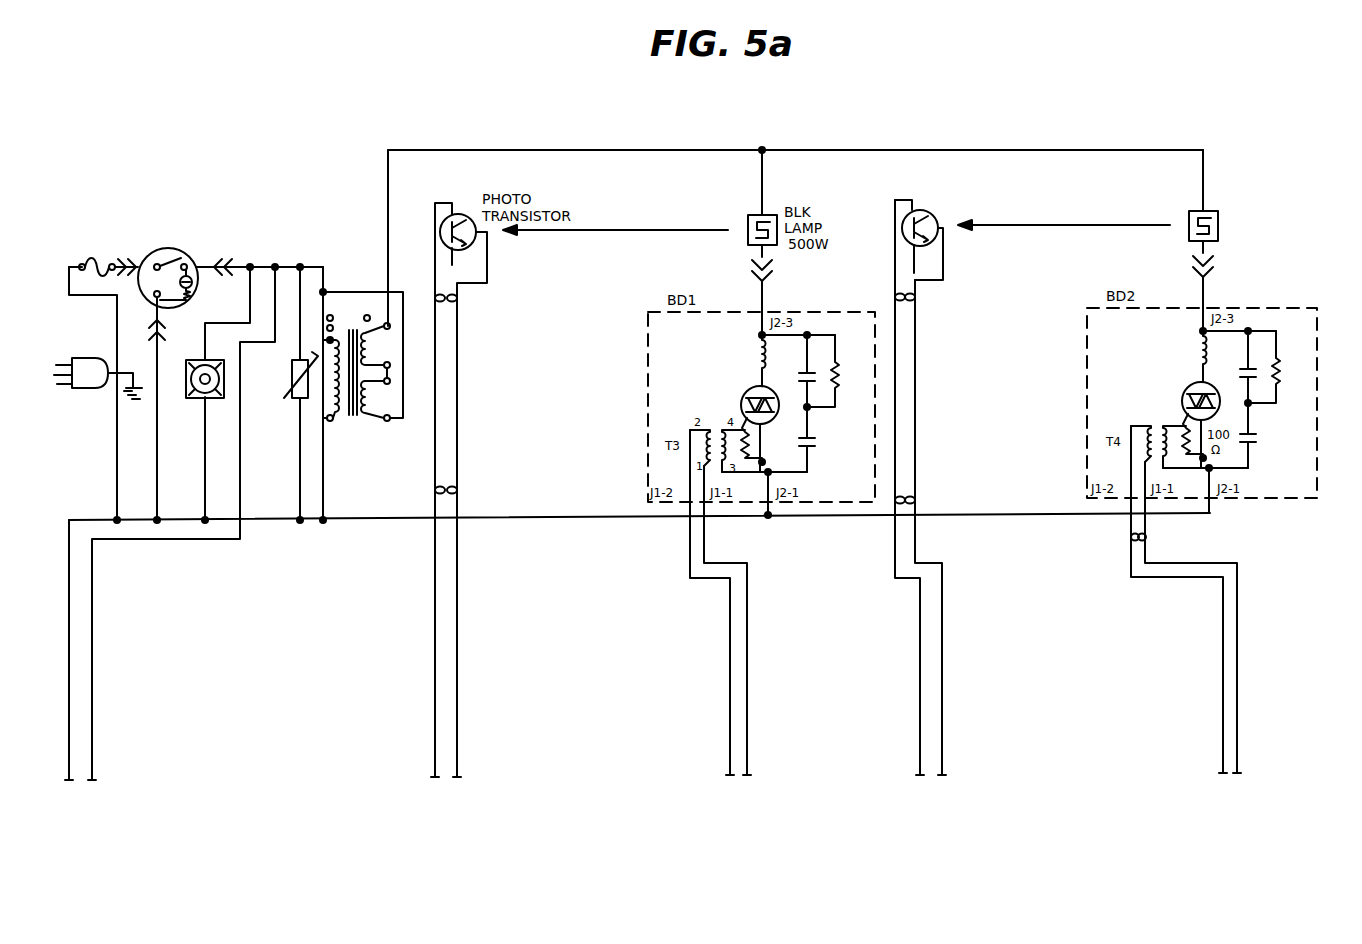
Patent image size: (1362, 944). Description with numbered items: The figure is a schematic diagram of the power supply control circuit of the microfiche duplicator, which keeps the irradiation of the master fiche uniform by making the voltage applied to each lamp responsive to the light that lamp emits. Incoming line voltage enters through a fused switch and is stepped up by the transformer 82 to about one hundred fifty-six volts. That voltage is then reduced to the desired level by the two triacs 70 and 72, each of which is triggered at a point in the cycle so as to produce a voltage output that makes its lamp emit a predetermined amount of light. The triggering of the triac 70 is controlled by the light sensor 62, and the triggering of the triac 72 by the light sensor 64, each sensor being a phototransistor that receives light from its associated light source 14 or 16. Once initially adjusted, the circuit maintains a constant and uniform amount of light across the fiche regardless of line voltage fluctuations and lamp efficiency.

The light source 14 is at (772, 214).
The light source 16 is at (1183, 240).
The light sensor 62 is at (462, 210).
The light sensor 64 is at (936, 214).
The triac 70 is at (748, 393).
The triac 72 is at (1184, 410).
The transformer 82 is at (358, 420).